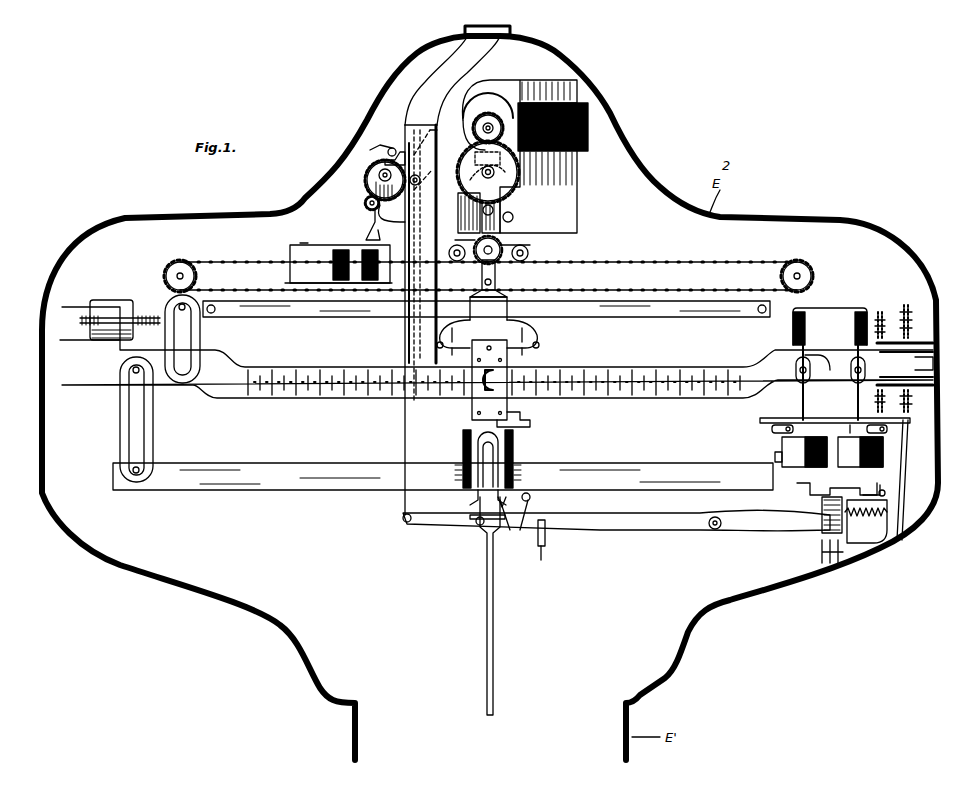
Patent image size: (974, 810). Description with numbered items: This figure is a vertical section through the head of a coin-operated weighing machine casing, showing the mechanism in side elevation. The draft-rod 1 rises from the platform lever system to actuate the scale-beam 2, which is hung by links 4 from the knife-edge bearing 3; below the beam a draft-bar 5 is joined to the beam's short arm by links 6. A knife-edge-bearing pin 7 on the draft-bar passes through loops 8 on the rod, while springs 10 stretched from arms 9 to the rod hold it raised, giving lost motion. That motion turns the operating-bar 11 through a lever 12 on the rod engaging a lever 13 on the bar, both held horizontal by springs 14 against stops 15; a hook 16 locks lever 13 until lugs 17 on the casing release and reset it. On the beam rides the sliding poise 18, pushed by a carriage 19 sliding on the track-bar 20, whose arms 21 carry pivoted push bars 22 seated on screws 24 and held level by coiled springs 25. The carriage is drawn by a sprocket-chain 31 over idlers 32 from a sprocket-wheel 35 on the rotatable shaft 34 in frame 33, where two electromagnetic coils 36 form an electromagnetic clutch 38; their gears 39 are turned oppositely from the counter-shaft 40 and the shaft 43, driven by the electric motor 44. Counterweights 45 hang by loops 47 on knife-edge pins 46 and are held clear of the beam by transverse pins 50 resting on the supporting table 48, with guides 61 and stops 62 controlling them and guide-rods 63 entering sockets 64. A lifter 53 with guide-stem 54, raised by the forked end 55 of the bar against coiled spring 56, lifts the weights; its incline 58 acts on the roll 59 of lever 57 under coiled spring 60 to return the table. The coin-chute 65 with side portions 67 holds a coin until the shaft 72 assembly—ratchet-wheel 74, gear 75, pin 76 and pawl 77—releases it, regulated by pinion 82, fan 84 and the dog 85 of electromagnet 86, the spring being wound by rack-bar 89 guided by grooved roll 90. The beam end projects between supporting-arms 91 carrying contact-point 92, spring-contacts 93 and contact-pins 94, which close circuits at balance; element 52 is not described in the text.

The draft-rod 1 is at (487, 612).
The scale-beam 2 is at (325, 397).
The knife-edge bearing 3 is at (168, 304).
The links 4 is at (200, 329).
The draft-bar 5 is at (240, 462).
The links 6 is at (118, 420).
The knife-edge-bearing pin 7 is at (478, 492).
The loops 8 is at (475, 432).
The arms 9 is at (462, 445).
The springs 10 is at (460, 462).
The operating-bar 11 is at (420, 528).
The lever 12 is at (480, 526).
The lever 13 is at (520, 530).
The springs 14 is at (510, 509).
The stops 15 is at (472, 520).
The hook 16 is at (542, 518).
The lugs 17 is at (539, 562).
The sliding poise 18 is at (508, 357).
The carriage 19 is at (488, 308).
The track-bar 20 is at (305, 318).
The arms 21 is at (445, 338).
The push bars 22 is at (512, 356).
The screws 24 is at (437, 346).
The coiled springs 25 is at (440, 327).
The sprocket-chain 31 is at (242, 288).
The idlers 32 is at (166, 270).
The frame 33 is at (458, 230).
The rotatable shaft 34 is at (530, 245).
The sprocket-wheel 35 is at (478, 258).
The electromagnetic coils 36 is at (482, 278).
The electromagnetic clutch 38 is at (519, 263).
The gears 39 is at (457, 245).
The counter-shaft 40 is at (460, 213).
The shaft 43 is at (514, 215).
The electric motor 44 is at (525, 146).
The counterweights 45 is at (782, 442).
The knife-edge pins 46 is at (796, 355).
The loops 47 is at (797, 380).
The supporting table 48 is at (832, 418).
The transverse pin 50 is at (801, 418).
The bracket 52 is at (530, 423).
The lifter 53 is at (832, 493).
The guide-stem 54 is at (822, 557).
The forked end 55 is at (845, 533).
The coiled spring 56 is at (822, 504).
The lever 57 is at (905, 463).
The incline 58 is at (871, 479).
The roll 59 is at (884, 490).
The coiled spring 60 is at (866, 518).
The guides 61 is at (848, 428).
The stops 62 is at (775, 455).
The guide-rods 63 is at (802, 353).
The sockets 64 is at (812, 328).
The coin-chute 65 is at (440, 75).
The side portions 67 is at (444, 130).
The shaft 72 is at (375, 192).
The ratchet-wheel 74 is at (378, 178).
The gear 75 is at (372, 170).
The pin 76 is at (386, 158).
The pawl 77 is at (383, 141).
The pinion 82 is at (365, 204).
The fan 84 is at (380, 225).
The dog 85 is at (370, 235).
The electromagnet 86 is at (338, 263).
The rack-bar 89 is at (393, 501).
The grooved roll 90 is at (420, 180).
The supporting-arms 91 is at (933, 340).
The contact-point 92 is at (908, 312).
The spring-contacts 93 is at (935, 352).
The contact-pins 94 is at (880, 335).